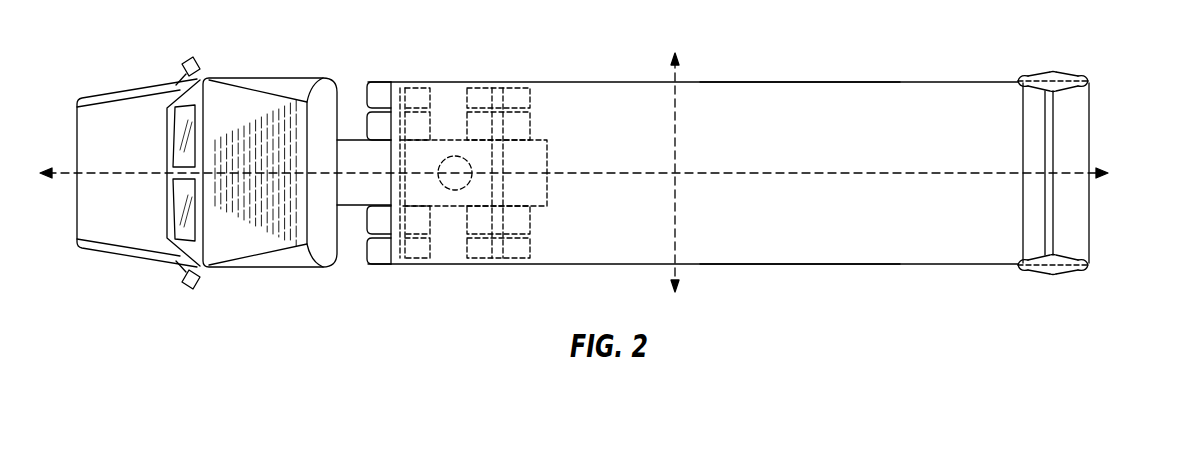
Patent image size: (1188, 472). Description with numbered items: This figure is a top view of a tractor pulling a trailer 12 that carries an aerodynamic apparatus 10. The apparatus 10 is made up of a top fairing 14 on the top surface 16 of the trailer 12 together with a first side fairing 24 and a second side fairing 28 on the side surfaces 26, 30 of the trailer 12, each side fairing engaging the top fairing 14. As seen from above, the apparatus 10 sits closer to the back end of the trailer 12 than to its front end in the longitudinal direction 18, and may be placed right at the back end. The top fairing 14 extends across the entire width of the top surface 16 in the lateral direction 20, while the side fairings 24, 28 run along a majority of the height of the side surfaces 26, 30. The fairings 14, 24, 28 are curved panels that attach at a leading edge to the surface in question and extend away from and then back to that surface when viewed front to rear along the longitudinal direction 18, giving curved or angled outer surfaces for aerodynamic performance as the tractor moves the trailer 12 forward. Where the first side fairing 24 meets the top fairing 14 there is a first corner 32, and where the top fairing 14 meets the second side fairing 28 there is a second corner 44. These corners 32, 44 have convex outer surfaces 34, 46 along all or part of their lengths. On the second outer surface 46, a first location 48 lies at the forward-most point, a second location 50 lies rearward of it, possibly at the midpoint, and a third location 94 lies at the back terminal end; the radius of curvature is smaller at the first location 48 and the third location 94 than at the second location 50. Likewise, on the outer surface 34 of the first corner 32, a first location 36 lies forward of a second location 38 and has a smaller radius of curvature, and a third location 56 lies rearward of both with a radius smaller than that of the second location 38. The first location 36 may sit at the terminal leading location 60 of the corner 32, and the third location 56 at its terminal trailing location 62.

The apparatus 10 is at (1006, 207).
The trailer 12 is at (442, 82).
The top fairing 14 is at (1022, 123).
The top surface 16 is at (448, 113).
The longitudinal direction 18 is at (853, 173).
The lateral direction 20 is at (675, 155).
The first side fairing 24 is at (1055, 277).
The side surface 26 is at (778, 265).
The second side fairing 28 is at (1058, 72).
The side surface 30 is at (778, 81).
The first corner 32 is at (1043, 272).
The outer surface 34 is at (1053, 276).
The first location 36 is at (1018, 267).
The second location 38 is at (1058, 255).
The second corner 44 is at (1035, 75).
The second outer surface 46 is at (1082, 76).
The first location 48 is at (1018, 80).
The second location 50 is at (1052, 72).
The third location 56 is at (1129, 254).
The terminal leading location 60 is at (974, 281).
The terminal trailing location 62 is at (1087, 265).
The third location 94 is at (1087, 83).